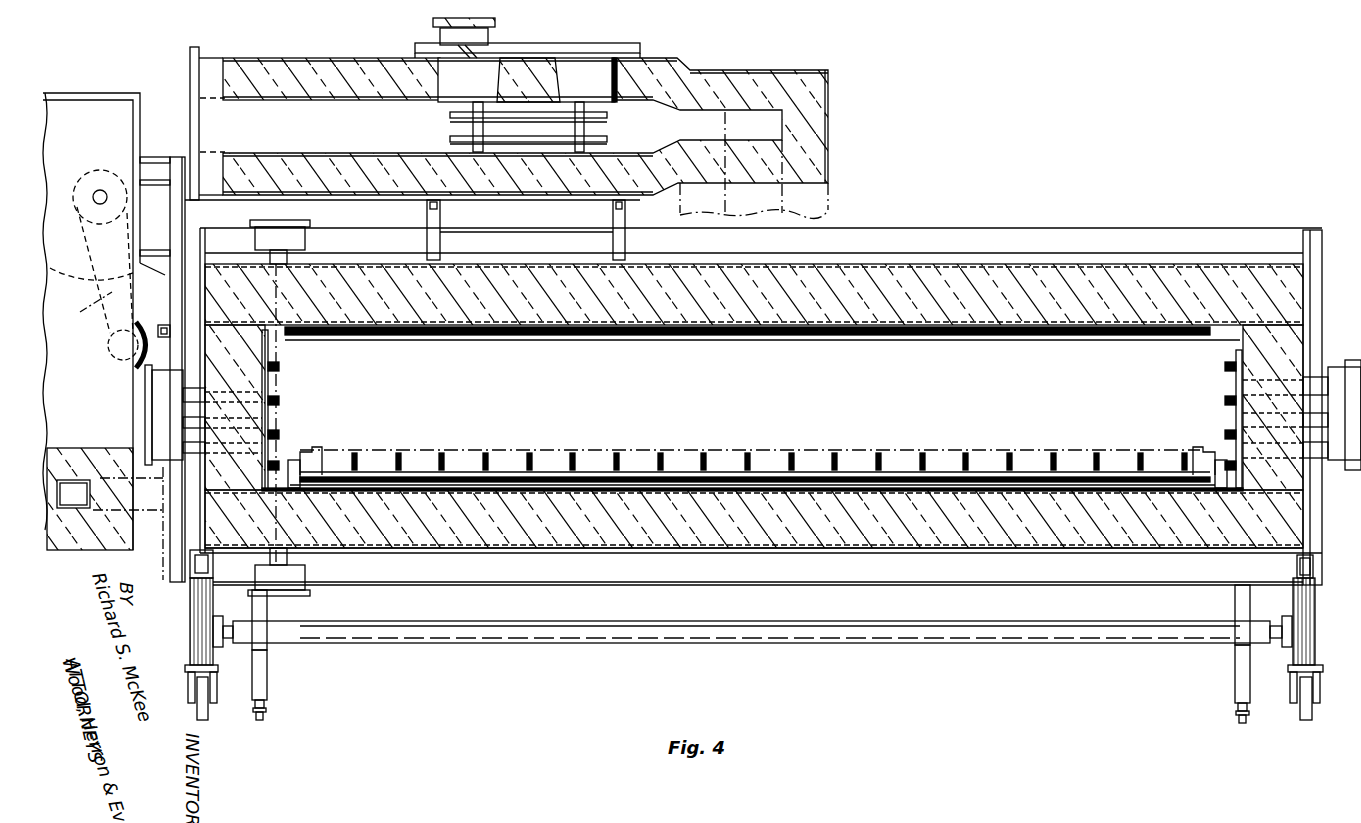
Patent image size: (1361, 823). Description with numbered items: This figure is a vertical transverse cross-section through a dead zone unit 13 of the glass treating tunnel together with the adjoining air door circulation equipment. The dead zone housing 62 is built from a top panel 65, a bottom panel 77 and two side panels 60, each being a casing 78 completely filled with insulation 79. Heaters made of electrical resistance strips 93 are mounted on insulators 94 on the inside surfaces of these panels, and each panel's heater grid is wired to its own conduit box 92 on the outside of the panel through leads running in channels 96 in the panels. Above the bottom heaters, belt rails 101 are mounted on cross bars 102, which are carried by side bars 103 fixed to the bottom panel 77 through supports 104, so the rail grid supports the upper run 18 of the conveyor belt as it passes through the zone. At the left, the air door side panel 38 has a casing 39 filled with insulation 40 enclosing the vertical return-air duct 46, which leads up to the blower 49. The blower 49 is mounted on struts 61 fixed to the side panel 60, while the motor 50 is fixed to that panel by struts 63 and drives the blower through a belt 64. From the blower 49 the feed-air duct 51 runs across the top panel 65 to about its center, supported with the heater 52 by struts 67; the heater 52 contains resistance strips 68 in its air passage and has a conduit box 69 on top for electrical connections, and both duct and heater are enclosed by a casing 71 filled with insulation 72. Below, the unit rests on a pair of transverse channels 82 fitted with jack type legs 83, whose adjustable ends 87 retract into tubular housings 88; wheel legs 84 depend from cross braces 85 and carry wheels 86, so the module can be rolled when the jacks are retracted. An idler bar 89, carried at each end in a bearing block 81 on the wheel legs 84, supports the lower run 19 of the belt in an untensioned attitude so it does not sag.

The dead zone unit 13 is at (937, 677).
The upper run 18 is at (682, 448).
The lower run 19 is at (592, 619).
The side panel 38 is at (101, 555).
The casing 39 is at (72, 487).
The insulation 40 is at (95, 533).
The vertical return-air duct 46 is at (78, 476).
The blower 49 is at (160, 100).
The motor 50 is at (94, 287).
The feed-air duct 51 is at (690, 65).
The heater 52 is at (450, 122).
The side panel 60 is at (178, 225).
The struts 61 is at (160, 189).
The housing 62 is at (992, 265).
The struts 63 is at (164, 324).
The belt 64 is at (103, 310).
The top panel 65 is at (807, 264).
The struts 67 is at (428, 217).
The resistance strips 68 is at (607, 136).
The conduit box 69 is at (488, 40).
The casing 71 is at (782, 70).
The insulation 72 is at (800, 107).
The bottom panel 77 is at (616, 551).
The casings 78 is at (722, 552).
The insulation 79 is at (795, 551).
The bearing block 81 is at (218, 627).
The transverse channels 82 is at (872, 576).
The jack type leg 83 is at (267, 672).
The wheel legs 84 is at (194, 613).
The cross braces 85 is at (213, 568).
The wheel 86 is at (205, 710).
The adjustable ends 87 is at (264, 712).
The tubular housing 88 is at (258, 688).
The idler bar 89 is at (740, 628).
The conduit box 92 is at (293, 238).
The resistance strips 93 is at (275, 401).
The insulators 94 is at (268, 428).
The channels 96 is at (186, 406).
The belt rails 101 is at (788, 460).
The cross bars 102 is at (636, 458).
The side bars 103 is at (308, 450).
The supports 104 is at (296, 470).